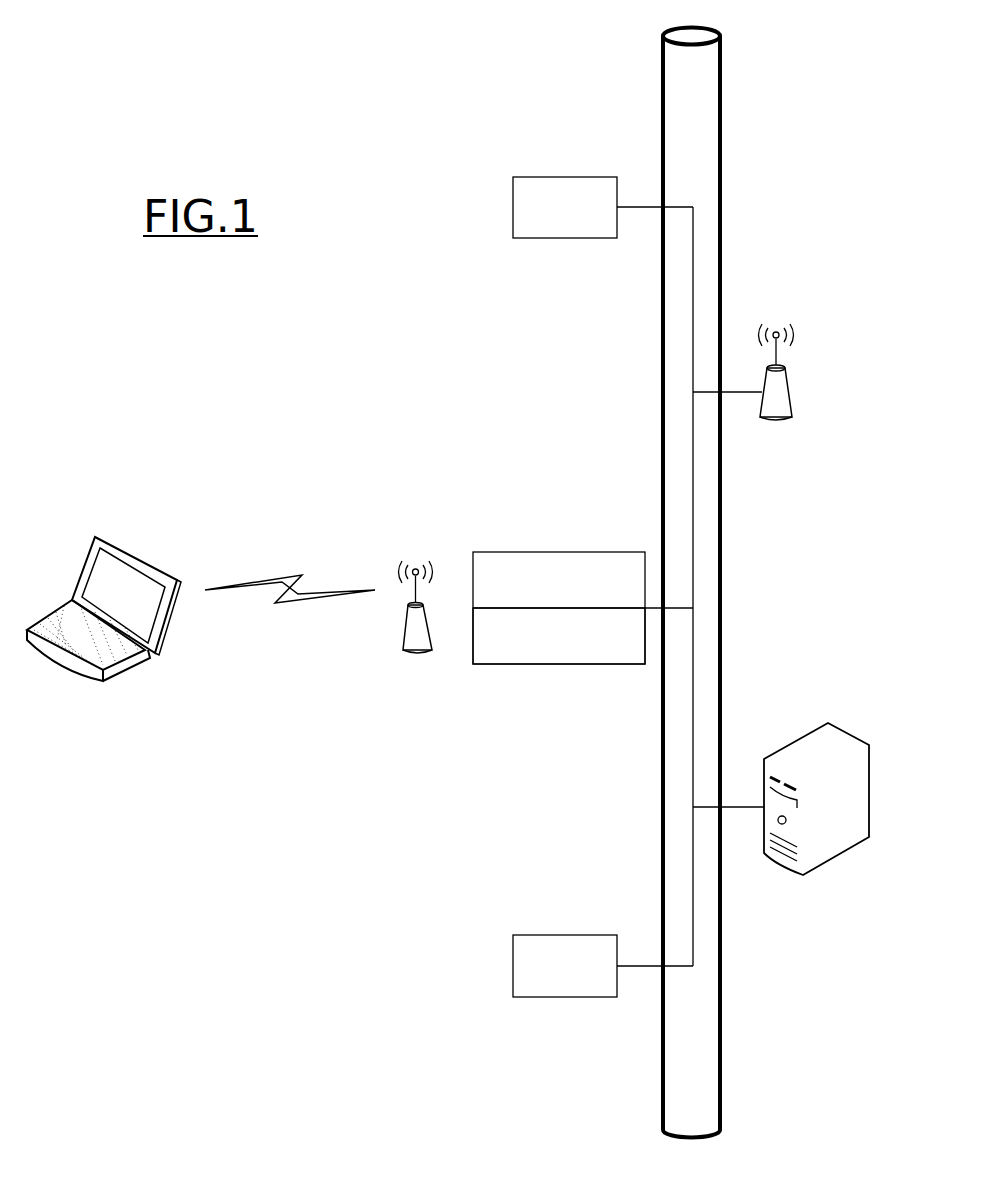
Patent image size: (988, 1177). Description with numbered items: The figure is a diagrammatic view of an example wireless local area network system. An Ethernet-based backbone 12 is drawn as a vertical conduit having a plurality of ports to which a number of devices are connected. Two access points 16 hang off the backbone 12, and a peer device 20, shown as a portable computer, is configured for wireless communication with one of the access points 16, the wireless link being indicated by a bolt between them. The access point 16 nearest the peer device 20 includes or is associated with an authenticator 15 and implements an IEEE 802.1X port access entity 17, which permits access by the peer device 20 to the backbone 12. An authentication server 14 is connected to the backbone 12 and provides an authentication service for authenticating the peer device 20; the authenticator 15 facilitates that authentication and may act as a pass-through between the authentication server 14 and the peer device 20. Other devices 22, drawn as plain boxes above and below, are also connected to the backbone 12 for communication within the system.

The Ethernet-based backbone 12 is at (665, 36).
The authentication server 14 is at (838, 727).
The authenticator 15 is at (558, 552).
The access point 16 is at (404, 645).
The IEEE 802.1X port access entity 17 is at (558, 664).
The peer device 20 is at (120, 551).
The other devices 22 is at (570, 238).